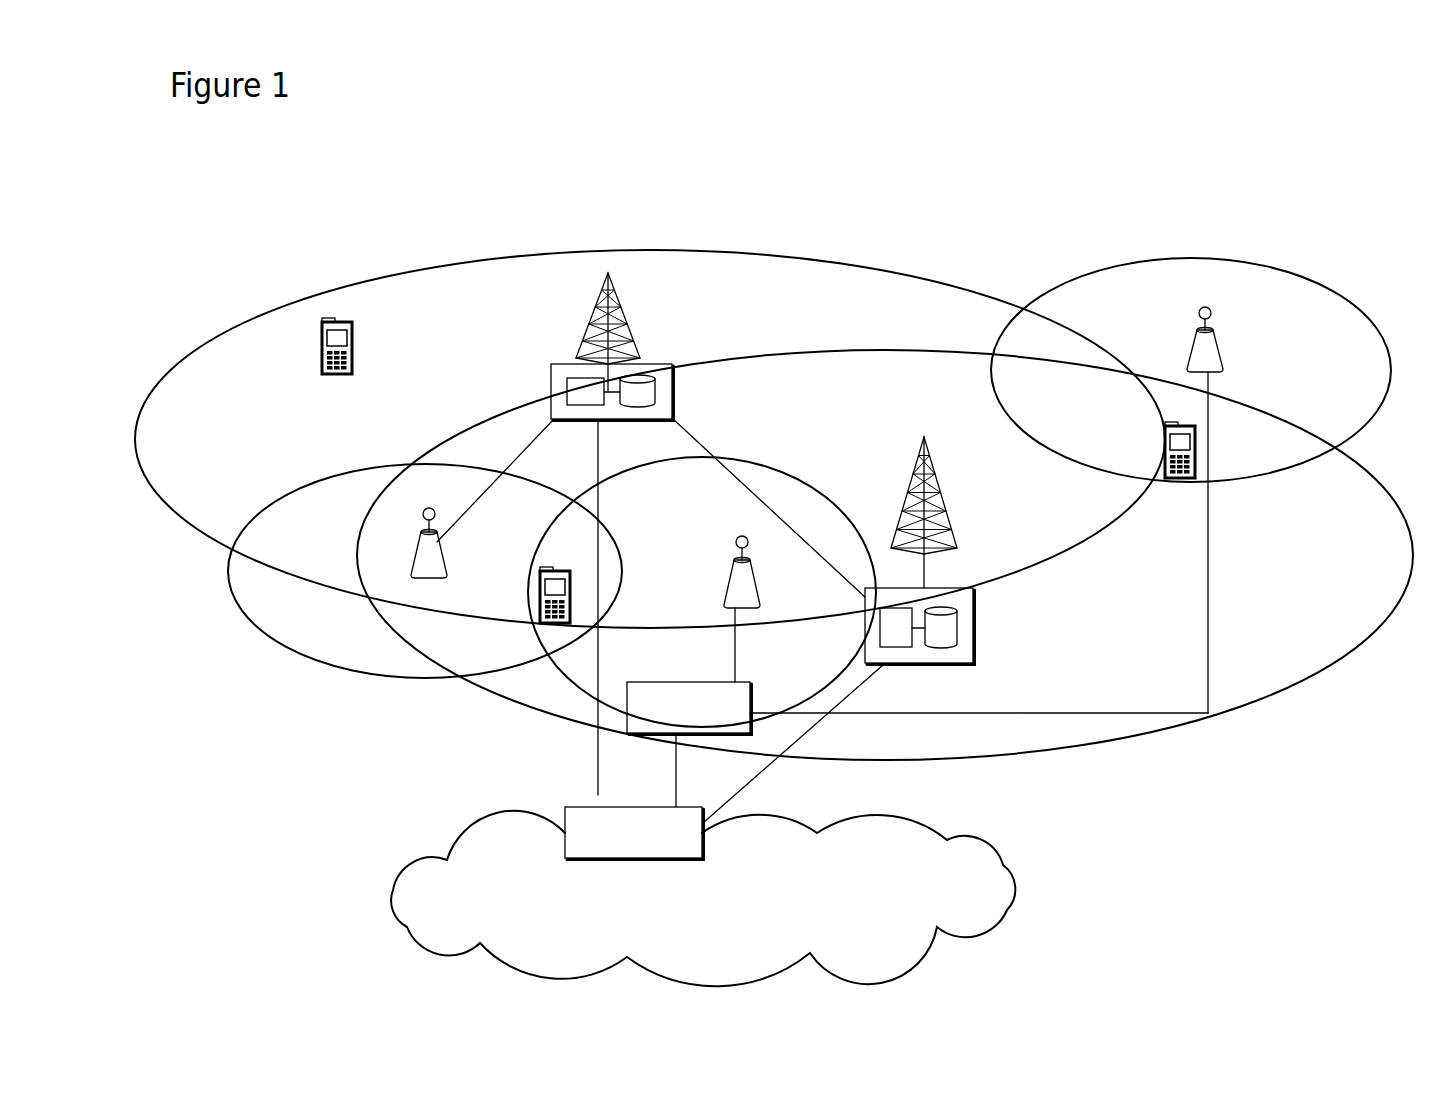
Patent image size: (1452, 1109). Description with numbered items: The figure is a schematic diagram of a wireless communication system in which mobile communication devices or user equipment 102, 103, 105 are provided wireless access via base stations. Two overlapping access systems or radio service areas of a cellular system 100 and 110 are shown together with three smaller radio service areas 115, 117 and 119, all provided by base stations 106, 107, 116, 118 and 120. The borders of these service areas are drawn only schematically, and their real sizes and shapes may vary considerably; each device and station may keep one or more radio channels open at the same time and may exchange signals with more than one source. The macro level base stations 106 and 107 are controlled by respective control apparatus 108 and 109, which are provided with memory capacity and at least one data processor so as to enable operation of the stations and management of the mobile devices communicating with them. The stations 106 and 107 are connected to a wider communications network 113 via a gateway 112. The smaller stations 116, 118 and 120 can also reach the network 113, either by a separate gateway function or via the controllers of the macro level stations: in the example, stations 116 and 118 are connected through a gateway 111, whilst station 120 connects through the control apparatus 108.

The radio service area of the cellular system 100 is at (228, 301).
The mobile communication device 102 is at (312, 363).
The mobile communication device 103 is at (540, 600).
The mobile communication device 105 is at (1182, 480).
The macro level base station 106 is at (590, 323).
The macro level base station 107 is at (947, 513).
The control apparatus 108 is at (551, 378).
The control apparatus 109 is at (963, 653).
The radio service area of the cellular system 110 is at (1286, 714).
The gateway 111 is at (635, 713).
The gateway 112 is at (567, 807).
The wider communications network 113 is at (480, 872).
The smaller radio service area 115 is at (1363, 274).
The smaller station 116 is at (1188, 326).
The smaller radio service area 117 is at (785, 455).
The smaller station 118 is at (745, 590).
The smaller radio service area 119 is at (315, 668).
The smaller station 120 is at (417, 548).